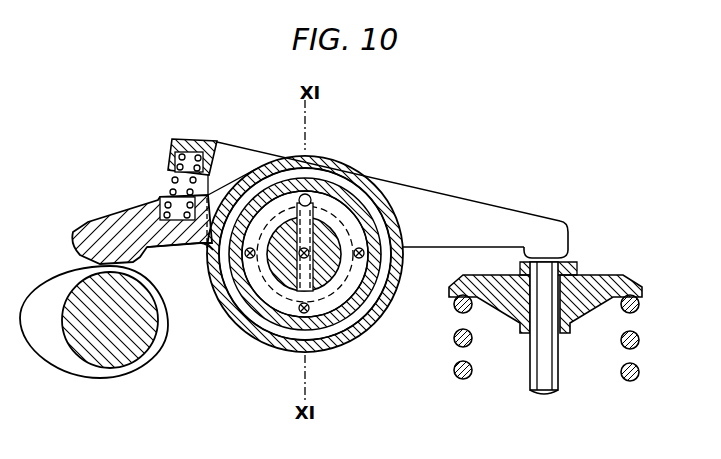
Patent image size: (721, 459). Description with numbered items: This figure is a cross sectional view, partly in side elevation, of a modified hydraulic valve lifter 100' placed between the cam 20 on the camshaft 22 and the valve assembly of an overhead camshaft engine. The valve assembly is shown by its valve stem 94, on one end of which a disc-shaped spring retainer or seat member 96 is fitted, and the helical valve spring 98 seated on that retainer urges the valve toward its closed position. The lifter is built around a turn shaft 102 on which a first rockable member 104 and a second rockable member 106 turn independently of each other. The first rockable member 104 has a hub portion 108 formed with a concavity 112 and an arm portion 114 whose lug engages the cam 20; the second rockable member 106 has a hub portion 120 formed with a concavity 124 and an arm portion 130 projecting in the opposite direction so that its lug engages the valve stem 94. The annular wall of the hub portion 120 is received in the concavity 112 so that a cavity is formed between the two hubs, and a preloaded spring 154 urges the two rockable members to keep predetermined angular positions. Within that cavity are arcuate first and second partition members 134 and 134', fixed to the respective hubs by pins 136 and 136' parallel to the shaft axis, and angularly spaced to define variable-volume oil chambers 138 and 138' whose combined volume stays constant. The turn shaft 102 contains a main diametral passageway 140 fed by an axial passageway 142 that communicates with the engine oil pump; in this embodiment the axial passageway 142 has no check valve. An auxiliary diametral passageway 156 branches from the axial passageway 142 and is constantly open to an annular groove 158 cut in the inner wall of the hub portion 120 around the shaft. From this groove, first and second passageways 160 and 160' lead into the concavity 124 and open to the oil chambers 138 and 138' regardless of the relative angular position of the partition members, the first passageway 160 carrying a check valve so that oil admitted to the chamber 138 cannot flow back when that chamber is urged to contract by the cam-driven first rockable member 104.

The cam 20 is at (55, 290).
The camshaft 22 is at (87, 343).
The valve stem 94 is at (540, 363).
The spring retainer or seat member 96 is at (588, 316).
The helical valve spring 98 is at (468, 380).
The hydraulic valve lifter 100' is at (327, 266).
The turn shaft 102 is at (378, 240).
The first rockable member 104 is at (232, 170).
The second rockable member 106 is at (378, 168).
The hub portion 108 is at (260, 168).
The concavity 112 is at (393, 273).
The arm portion 114 is at (110, 228).
The hub portion 120 is at (220, 247).
The concavity 124 is at (292, 178).
The arm portion 130 is at (522, 215).
The first partition member 134 is at (283, 311).
The second partition member 134' is at (368, 348).
The pin 136 is at (258, 273).
The pin 136' is at (416, 322).
The variable-volume oil chamber 138 is at (329, 234).
The variable-volume oil chamber 138' is at (325, 373).
The diametral passageway 140 is at (270, 333).
The axial passageway 142 is at (257, 317).
The spring 154 is at (173, 188).
The auxiliary diametral passageway 156 is at (297, 350).
The annular groove 158 is at (335, 207).
The first passageway 160 is at (326, 205).
The second passageway 160' is at (280, 382).